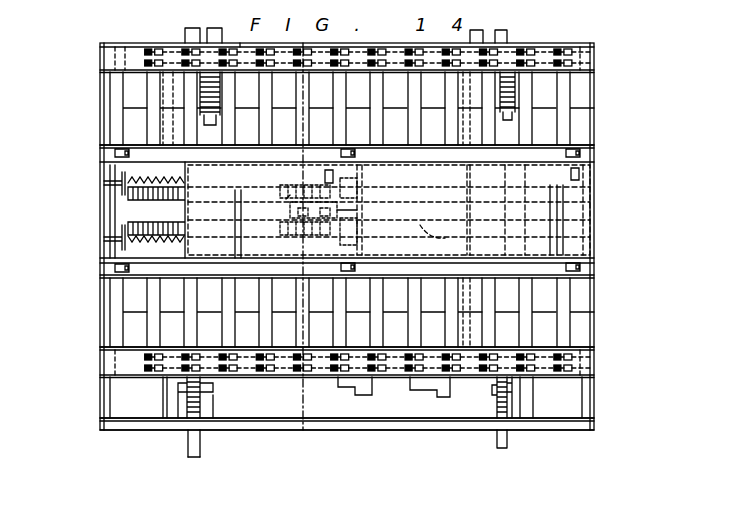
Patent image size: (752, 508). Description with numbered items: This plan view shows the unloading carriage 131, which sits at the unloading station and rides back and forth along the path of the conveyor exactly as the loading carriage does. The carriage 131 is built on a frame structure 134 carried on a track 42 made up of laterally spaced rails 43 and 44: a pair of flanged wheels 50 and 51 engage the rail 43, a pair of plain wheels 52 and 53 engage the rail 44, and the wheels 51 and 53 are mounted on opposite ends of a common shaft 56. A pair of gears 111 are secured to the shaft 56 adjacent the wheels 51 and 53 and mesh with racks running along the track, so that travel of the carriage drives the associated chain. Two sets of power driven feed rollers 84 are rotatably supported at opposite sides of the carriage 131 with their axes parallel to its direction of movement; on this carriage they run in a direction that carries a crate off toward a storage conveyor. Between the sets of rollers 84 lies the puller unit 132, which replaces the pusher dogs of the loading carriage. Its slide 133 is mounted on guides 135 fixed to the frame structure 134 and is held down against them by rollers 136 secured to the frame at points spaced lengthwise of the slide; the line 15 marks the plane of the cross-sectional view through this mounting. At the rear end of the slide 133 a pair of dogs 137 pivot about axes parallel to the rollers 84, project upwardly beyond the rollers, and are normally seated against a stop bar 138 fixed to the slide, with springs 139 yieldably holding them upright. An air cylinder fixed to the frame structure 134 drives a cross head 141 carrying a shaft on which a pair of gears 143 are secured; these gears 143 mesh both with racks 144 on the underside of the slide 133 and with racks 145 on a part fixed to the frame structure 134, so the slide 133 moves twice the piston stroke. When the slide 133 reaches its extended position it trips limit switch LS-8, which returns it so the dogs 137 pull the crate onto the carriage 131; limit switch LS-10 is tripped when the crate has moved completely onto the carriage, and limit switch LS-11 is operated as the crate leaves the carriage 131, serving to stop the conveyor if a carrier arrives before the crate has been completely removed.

The centerline 15 is at (283, 137).
The track 42 is at (210, 460).
The rail 43 is at (192, 458).
The rail 44 is at (508, 440).
The flanged wheel 50 is at (200, 398).
The flanged wheel 51 is at (195, 75).
The plain wheel 52 is at (508, 75).
The plain wheel 53 is at (502, 400).
The shaft 56 is at (246, 47).
The power driven rollers 84 is at (376, 100).
The gears 111 is at (216, 17).
The unloading carriage 131 is at (608, 357).
The puller unit 132 is at (605, 223).
The slide 133 is at (432, 192).
The carriage frame structure 134 is at (596, 428).
The guides 135 is at (592, 151).
The rollers 136 is at (114, 152).
The dogs 137 is at (104, 183).
The bar 138 is at (110, 207).
The springs 139 is at (170, 165).
The cross head 141 is at (357, 210).
The gears 143 is at (290, 198).
The racks 144 is at (425, 230).
The racks 145 is at (143, 196).
The limit switch LS-8 is at (325, 174).
The limit switch LS-10 is at (352, 389).
The limit switch LS-11 is at (440, 392).